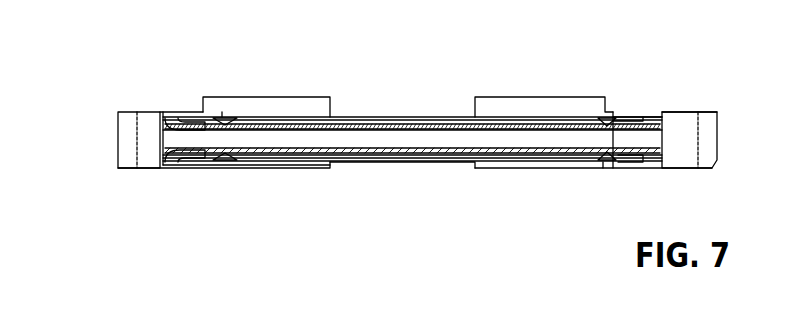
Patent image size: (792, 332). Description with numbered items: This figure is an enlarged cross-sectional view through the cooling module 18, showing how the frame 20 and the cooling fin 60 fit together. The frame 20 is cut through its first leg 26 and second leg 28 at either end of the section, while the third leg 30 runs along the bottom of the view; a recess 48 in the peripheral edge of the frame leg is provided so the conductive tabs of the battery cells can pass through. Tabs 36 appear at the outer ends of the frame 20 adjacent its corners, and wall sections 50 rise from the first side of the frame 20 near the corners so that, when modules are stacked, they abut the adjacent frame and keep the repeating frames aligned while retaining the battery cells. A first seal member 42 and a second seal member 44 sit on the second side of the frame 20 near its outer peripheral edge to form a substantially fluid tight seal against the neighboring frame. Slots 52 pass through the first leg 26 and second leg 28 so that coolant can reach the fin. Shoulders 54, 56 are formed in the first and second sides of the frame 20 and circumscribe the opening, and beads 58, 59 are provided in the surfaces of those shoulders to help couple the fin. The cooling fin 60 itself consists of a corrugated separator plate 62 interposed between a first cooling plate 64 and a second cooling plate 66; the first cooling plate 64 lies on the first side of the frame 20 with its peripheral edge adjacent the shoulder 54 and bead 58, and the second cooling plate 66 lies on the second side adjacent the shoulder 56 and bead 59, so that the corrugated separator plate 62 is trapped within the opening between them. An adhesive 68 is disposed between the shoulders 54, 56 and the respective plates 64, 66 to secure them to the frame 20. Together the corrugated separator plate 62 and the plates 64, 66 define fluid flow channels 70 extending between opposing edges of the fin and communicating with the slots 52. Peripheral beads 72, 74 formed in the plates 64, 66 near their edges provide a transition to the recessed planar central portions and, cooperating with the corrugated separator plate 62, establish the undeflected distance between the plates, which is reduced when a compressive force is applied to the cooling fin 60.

The cooling module 18 is at (723, 72).
The frame 20 is at (661, 110).
The first leg 26 is at (673, 157).
The second leg 28 is at (163, 168).
The third leg 30 is at (520, 168).
The tabs 36 is at (127, 112).
The first seal member 42 is at (540, 169).
The second seal member 44 is at (190, 168).
The recess 48 is at (475, 164).
The wall sections 50 is at (290, 97).
The slots 52 is at (155, 112).
The shoulder 54 is at (635, 119).
The shoulder 56 is at (640, 165).
The bead 58 is at (608, 118).
The bead 59 is at (612, 163).
The cooling fin 60 is at (450, 117).
The corrugated separator plate 62 is at (370, 154).
The first cooling plate 64 is at (350, 121).
The second cooling plate 66 is at (343, 162).
The adhesive 68 is at (188, 117).
The fluid flow channels 70 is at (417, 140).
The peripheral bead 72 is at (224, 118).
The peripheral bead 74 is at (224, 163).